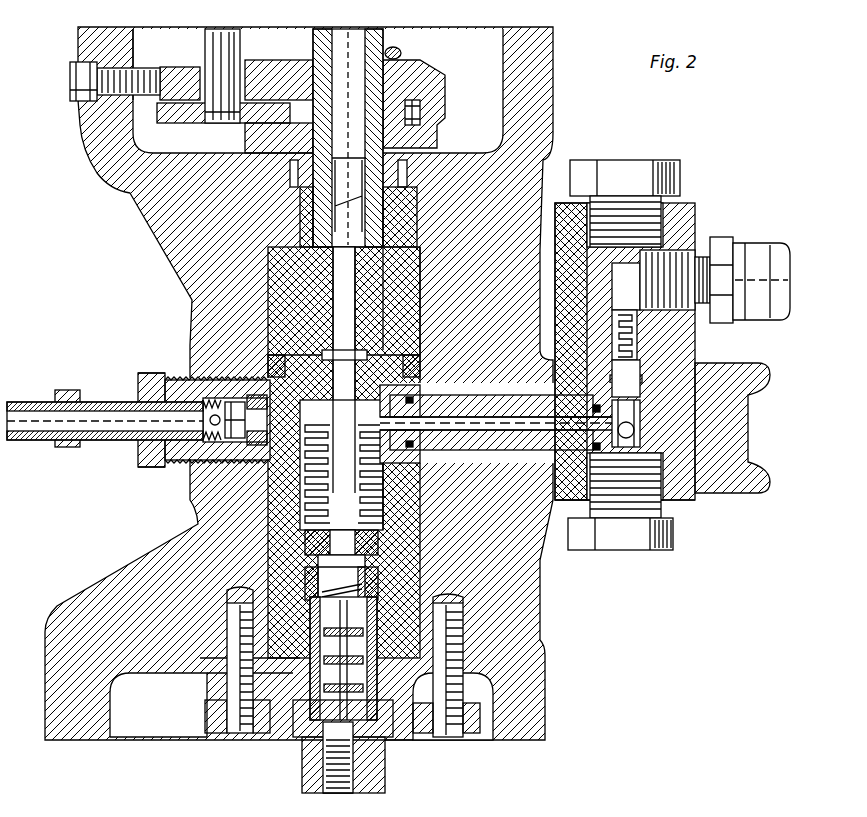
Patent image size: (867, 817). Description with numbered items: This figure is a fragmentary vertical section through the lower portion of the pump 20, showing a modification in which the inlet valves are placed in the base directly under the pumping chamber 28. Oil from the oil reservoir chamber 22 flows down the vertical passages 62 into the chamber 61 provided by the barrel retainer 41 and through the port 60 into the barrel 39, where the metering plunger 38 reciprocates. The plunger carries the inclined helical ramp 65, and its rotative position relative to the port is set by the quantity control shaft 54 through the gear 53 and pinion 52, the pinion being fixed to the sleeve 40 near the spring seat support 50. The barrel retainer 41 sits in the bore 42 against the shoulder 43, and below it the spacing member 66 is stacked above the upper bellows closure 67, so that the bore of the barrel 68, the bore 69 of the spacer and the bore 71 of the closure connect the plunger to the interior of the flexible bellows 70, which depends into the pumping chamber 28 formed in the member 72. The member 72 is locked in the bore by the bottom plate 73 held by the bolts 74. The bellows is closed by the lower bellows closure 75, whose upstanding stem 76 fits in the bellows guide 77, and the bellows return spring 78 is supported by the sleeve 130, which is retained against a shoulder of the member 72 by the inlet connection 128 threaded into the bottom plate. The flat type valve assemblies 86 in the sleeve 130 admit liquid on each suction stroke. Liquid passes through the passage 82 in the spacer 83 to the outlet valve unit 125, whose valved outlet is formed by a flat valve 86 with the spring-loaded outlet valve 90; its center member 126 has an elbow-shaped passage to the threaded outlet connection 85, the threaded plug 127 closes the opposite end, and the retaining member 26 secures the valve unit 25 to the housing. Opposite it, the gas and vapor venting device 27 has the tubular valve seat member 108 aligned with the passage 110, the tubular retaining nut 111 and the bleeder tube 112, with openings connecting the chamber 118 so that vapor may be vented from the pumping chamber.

The pump 20 is at (147, 240).
The oil reservoir chamber 22 is at (80, 36).
The quantity control shaft 54 is at (212, 47).
The sleeve 40 is at (313, 46).
The metering plunger 38 is at (357, 44).
The barrel 39 is at (400, 55).
The shoulder 43 is at (437, 90).
The pinion 52 is at (420, 115).
The spring seat support 50 is at (490, 140).
The gear 53 is at (160, 113).
The barrel retainer 41 is at (405, 180).
The vertical passages 62 is at (290, 184).
The chamber 61 is at (415, 198).
The port 60 is at (305, 215).
The inclined helical ramp 65 is at (363, 203).
The bore 42 is at (270, 272).
The bore of the barrel 68 is at (385, 272).
The bore 69 is at (356, 300).
The spacing member 66 is at (430, 330).
The bore 71 is at (330, 352).
The upper bellows closure 67 is at (415, 392).
The spacer 83 is at (495, 405).
The tubular retaining nut 111 is at (160, 375).
The bleeder tube 112 is at (108, 402).
The gas and vapor venting device 27 is at (133, 468).
The bellows guide 77 is at (320, 470).
The flexible bellows 70 is at (395, 503).
The passage 82 is at (535, 430).
The upstanding stem 76 is at (345, 515).
The pumping chamber 28 is at (385, 540).
The lower bellows closure 75 is at (320, 553).
The bellows return spring 78 is at (372, 587).
The flat type valve assembly 86 is at (380, 647).
The member 72 is at (158, 705).
The bolts 74 is at (208, 712).
The bottom plate 73 is at (282, 700).
The inlet connection 128 is at (388, 755).
The sleeve 130 is at (405, 720).
The chamber 118 is at (345, 805).
The passage 110 is at (453, 705).
The tubular valve seat member 108 is at (461, 778).
The valve unit 25 is at (705, 204).
The threaded outlet connection 85 is at (752, 243).
The spring-loaded outlet valve 90 is at (655, 344).
The center member 126 is at (640, 432).
The retaining member 26 is at (752, 495).
The outlet valve unit 125 is at (694, 515).
The threaded plug 127 is at (618, 550).